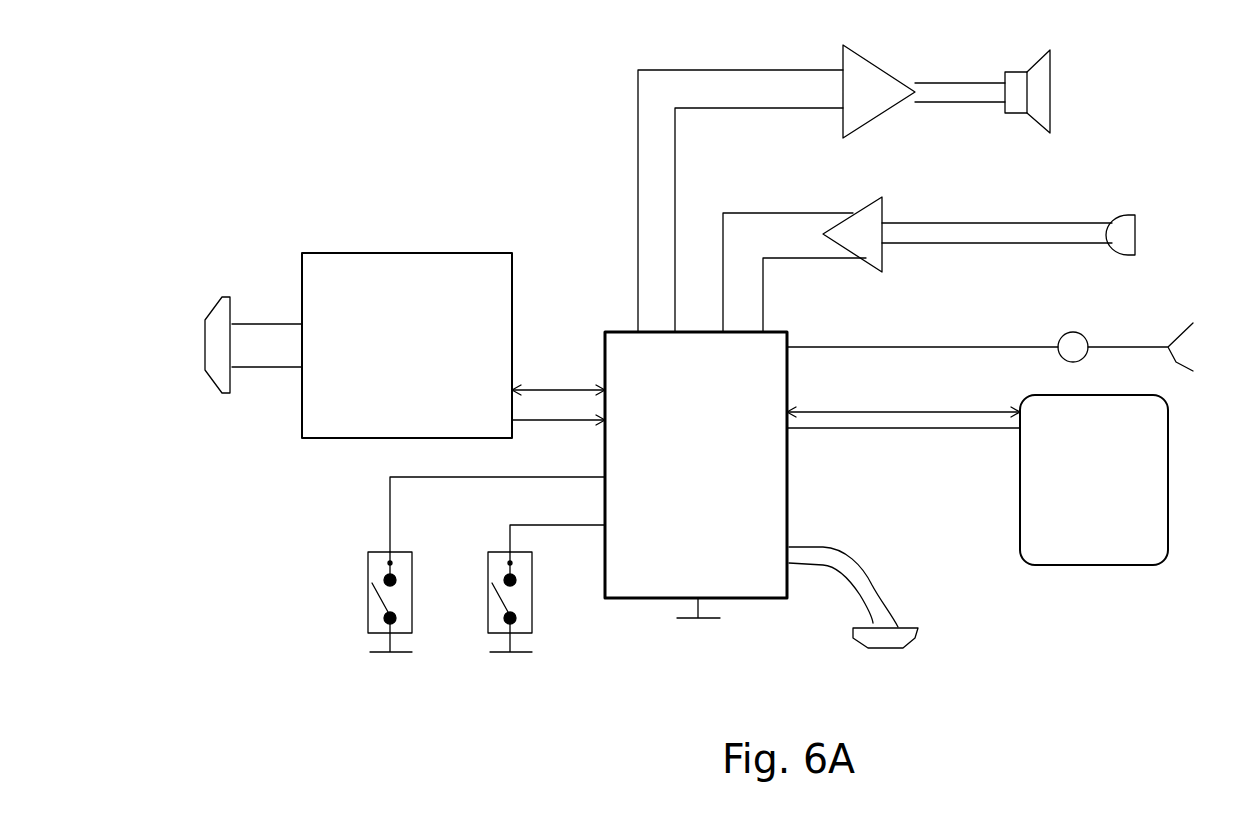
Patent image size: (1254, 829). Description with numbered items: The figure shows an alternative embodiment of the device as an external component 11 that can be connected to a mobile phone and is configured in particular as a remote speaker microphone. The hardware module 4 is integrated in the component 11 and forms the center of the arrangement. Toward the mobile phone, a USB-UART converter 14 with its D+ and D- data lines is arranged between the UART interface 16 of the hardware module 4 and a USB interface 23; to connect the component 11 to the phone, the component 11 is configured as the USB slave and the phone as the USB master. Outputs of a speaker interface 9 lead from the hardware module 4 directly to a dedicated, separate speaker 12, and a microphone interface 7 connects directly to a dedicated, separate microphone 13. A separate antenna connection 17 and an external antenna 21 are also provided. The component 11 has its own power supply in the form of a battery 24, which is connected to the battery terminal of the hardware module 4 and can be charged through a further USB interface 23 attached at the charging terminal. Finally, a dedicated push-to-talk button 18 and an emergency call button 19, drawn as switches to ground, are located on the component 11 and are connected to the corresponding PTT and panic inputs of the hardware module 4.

The hardware module 4 is at (638, 600).
The microphone interface 7 is at (772, 324).
The speaker interface 9 is at (632, 324).
The external component 11 is at (553, 98).
The speaker 12 is at (1050, 72).
The microphone 13 is at (1135, 215).
The USB-UART converter 14 is at (437, 253).
The UART interface 16 is at (545, 388).
The antenna connection 17 is at (1080, 333).
The push-to-talk button 18 is at (491, 635).
The emergency call button 19 is at (371, 635).
The external antenna 21 is at (1180, 356).
The USB interface 23 is at (218, 372).
The battery 24 is at (1168, 475).